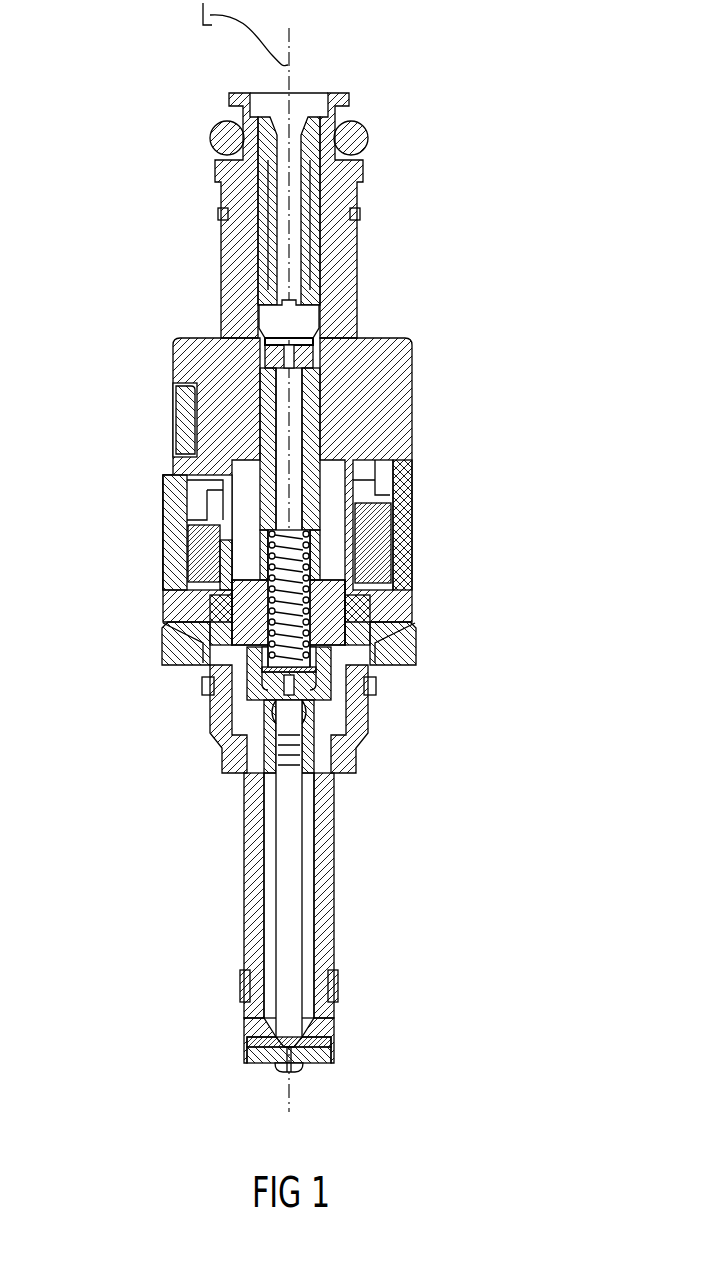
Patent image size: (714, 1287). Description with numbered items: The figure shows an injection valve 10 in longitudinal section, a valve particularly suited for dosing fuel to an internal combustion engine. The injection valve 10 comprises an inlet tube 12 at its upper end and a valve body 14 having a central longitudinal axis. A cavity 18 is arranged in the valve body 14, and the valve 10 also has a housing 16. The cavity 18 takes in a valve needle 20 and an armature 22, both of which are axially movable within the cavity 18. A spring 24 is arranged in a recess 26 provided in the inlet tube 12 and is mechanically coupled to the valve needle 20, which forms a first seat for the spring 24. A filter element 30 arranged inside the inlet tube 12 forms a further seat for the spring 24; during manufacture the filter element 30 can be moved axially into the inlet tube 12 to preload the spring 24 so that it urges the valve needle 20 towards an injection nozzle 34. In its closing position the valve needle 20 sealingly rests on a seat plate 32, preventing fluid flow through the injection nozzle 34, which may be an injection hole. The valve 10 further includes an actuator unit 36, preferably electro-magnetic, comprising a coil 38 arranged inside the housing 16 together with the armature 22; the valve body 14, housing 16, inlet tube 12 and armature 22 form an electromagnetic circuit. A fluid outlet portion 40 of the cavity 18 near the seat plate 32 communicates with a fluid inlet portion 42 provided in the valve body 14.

The injection valve 10 is at (500, 137).
The inlet tube 12 is at (240, 233).
The valve body 14 is at (325, 833).
The housing 16 is at (413, 492).
The cavity 18 is at (307, 873).
The valve needle 20 is at (295, 912).
The armature 22 is at (255, 600).
The spring 24 is at (318, 616).
The recess 26 is at (303, 313).
The filter element 30 is at (307, 352).
The seat plate 32 is at (330, 1058).
The injection nozzle 34 is at (304, 1073).
The actuator unit 36 is at (152, 490).
The coil 38 is at (195, 558).
The fluid outlet portion 40 is at (307, 1028).
The fluid inlet portion 42 is at (285, 390).